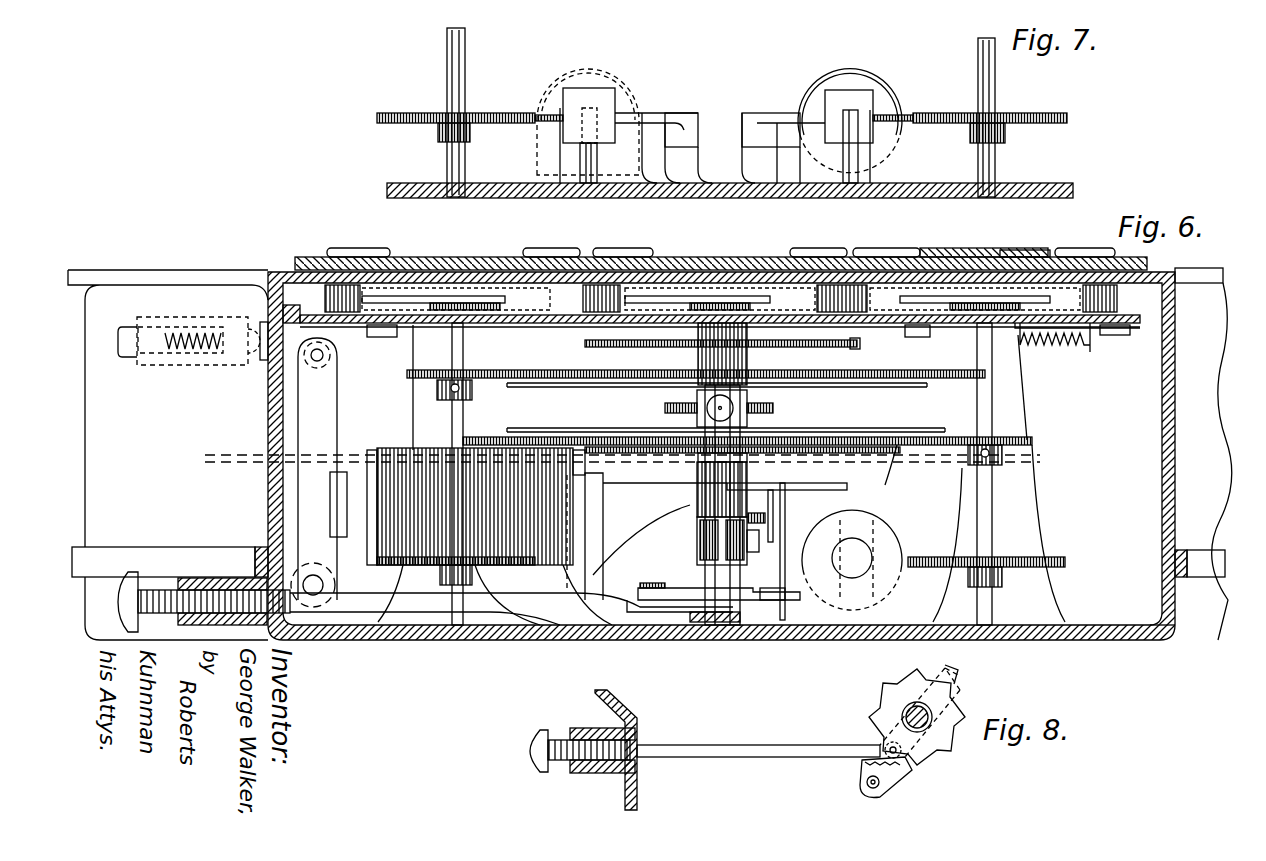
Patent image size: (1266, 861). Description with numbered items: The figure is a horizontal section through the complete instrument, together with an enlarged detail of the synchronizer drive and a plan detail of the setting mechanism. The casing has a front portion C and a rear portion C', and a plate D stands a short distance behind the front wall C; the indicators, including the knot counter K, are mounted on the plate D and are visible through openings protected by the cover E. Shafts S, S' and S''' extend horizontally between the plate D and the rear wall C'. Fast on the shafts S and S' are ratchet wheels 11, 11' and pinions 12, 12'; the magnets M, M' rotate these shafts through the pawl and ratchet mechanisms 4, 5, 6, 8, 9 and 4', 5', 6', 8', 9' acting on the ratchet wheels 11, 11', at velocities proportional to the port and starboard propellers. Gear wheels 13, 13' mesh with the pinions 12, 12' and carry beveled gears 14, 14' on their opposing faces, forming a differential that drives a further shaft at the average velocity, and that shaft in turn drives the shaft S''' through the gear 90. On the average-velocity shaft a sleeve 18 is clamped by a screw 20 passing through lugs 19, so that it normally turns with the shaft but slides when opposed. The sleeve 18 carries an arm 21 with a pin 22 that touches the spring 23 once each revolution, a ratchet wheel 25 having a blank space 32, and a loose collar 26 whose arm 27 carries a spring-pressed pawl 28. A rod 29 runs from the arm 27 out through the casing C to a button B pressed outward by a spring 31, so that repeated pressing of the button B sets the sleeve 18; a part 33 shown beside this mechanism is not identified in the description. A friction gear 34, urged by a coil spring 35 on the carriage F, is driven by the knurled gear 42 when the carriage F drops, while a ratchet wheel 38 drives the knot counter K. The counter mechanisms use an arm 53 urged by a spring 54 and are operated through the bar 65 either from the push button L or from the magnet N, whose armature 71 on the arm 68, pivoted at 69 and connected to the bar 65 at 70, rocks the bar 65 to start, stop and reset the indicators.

In FIG. 7, the shaft S is at (431, 112).
In FIG. 6, the shaft S is at (418, 474).
In FIG. 7, the shaft S' is at (1000, 117).
In FIG. 6, the shaft S' is at (1015, 474).
In FIG. 6, the shaft S''' is at (744, 474).
In FIG. 7, the magnet M is at (588, 99).
In FIG. 7, the magnet M' is at (855, 103).
In FIG. 6, the magnet M' is at (869, 560).
In FIG. 7, the pawl and ratchet mechanism 4 is at (656, 111).
In FIG. 7, the pawl and ratchet mechanism 4' is at (783, 109).
In FIG. 7, the pawl and ratchet mechanism component 5 is at (679, 148).
In FIG. 7, the pawl and ratchet mechanism component 5' is at (771, 148).
In FIG. 7, the pawl and ratchet mechanism component 6 is at (560, 127).
In FIG. 7, the pawl and ratchet mechanism component 6' is at (881, 105).
In FIG. 7, the pawl and ratchet mechanism component 8 is at (590, 185).
In FIG. 7, the pawl and ratchet mechanism component 8' is at (851, 168).
In FIG. 6, the pawl and ratchet mechanism component 9 is at (720, 293).
In FIG. 6, the pawl and ratchet mechanism component 9' is at (721, 354).
In FIG. 7, the ratchet wheel 11 is at (450, 117).
In FIG. 6, the ratchet wheel 11 is at (436, 559).
In FIG. 7, the ratchet wheel 11' is at (995, 117).
In FIG. 6, the ratchet wheel 11' is at (1013, 563).
In FIG. 6, the pinion 12 is at (671, 373).
In FIG. 6, the pinion 12' is at (774, 441).
In FIG. 6, the gear wheel 13 is at (966, 387).
In FIG. 6, the gear wheel 13' is at (895, 479).
In FIG. 6, the beveled gear 14 is at (717, 400).
In FIG. 6, the beveled gear 14' is at (726, 411).
In FIG. 6, the sleeve 18 is at (697, 502).
In FIG. 6, the lugs 19 is at (697, 527).
In FIG. 6, the screw 20 is at (760, 552).
In FIG. 6, the arm 21 is at (770, 484).
In FIG. 8, the arm 21 is at (960, 669).
In FIG. 6, the pin 22 is at (773, 502).
In FIG. 6, the spring 23 is at (765, 518).
In FIG. 6, the ratchet wheel 25 is at (772, 600).
In FIG. 8, the ratchet wheel 25 is at (960, 700).
In FIG. 6, the collar 26 is at (715, 617).
In FIG. 6, the arm 27 is at (625, 603).
In FIG. 8, the arm 27 is at (863, 778).
In FIG. 6, the spring-pressed pawl 28 is at (665, 583).
In FIG. 8, the spring-pressed pawl 28 is at (905, 780).
In FIG. 6, the rod 29 is at (420, 600).
In FIG. 8, the rod 29 is at (772, 752).
In FIG. 6, the spring 31 is at (160, 588).
In FIG. 8, the spring 31 is at (562, 760).
In FIG. 8, the blank space 32 is at (878, 752).
In FIG. 6, the lever 33 is at (593, 575).
In FIG. 6, the friction gear 34 is at (900, 461).
In FIG. 6, the coil spring 35 is at (805, 449).
In FIG. 6, the ratchet wheel 38 is at (773, 408).
In FIG. 6, the knurled gear 42 is at (690, 465).
In FIG. 6, the arm 53 is at (930, 298).
In FIG. 6, the spring 54 is at (1060, 298).
In FIG. 6, the bar 65 is at (292, 320).
In FIG. 6, the arm 68 is at (320, 412).
In FIG. 6, the pivot 69 is at (313, 575).
In FIG. 6, the pivotal connection 70 is at (311, 357).
In FIG. 6, the armature 71 is at (332, 502).
In FIG. 6, the gear 90 is at (860, 344).
In FIG. 6, the button B is at (128, 572).
In FIG. 8, the button B is at (530, 760).
In FIG. 6, the front portion of casing C is at (650, 448).
In FIG. 8, the front portion of casing C is at (637, 750).
In FIG. 7, the rear portion of casing C' is at (759, 188).
In FIG. 6, the rear portion of casing C' is at (1171, 655).
In FIG. 6, the plate D is at (1186, 300).
In FIG. 6, the cover E is at (1002, 250).
In FIG. 6, the carriage F is at (653, 493).
In FIG. 6, the knot counter K is at (880, 285).
In FIG. 6, the push button L is at (128, 352).
In FIG. 6, the magnet N is at (533, 525).